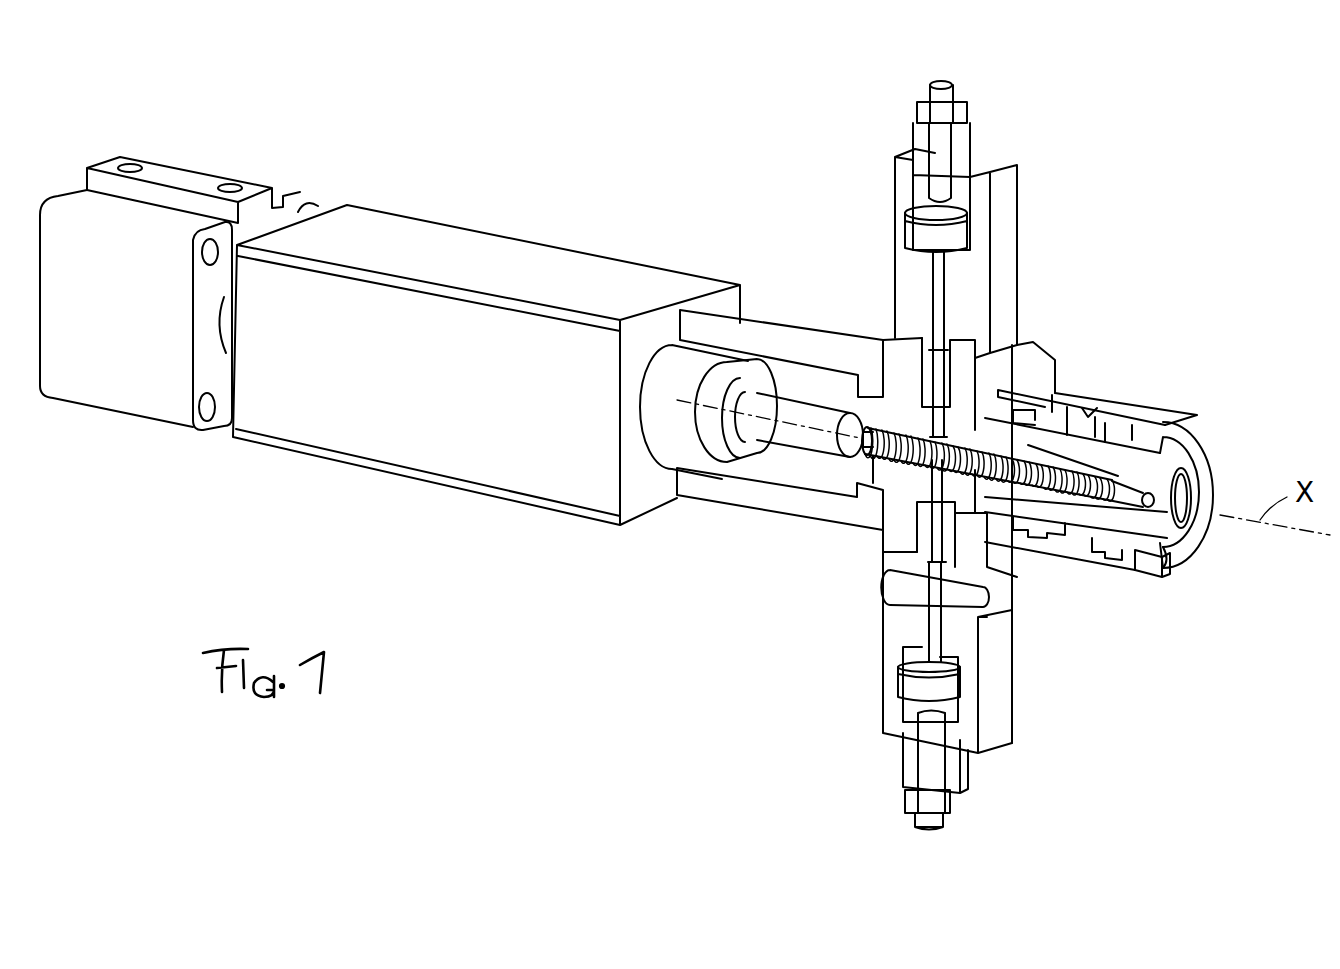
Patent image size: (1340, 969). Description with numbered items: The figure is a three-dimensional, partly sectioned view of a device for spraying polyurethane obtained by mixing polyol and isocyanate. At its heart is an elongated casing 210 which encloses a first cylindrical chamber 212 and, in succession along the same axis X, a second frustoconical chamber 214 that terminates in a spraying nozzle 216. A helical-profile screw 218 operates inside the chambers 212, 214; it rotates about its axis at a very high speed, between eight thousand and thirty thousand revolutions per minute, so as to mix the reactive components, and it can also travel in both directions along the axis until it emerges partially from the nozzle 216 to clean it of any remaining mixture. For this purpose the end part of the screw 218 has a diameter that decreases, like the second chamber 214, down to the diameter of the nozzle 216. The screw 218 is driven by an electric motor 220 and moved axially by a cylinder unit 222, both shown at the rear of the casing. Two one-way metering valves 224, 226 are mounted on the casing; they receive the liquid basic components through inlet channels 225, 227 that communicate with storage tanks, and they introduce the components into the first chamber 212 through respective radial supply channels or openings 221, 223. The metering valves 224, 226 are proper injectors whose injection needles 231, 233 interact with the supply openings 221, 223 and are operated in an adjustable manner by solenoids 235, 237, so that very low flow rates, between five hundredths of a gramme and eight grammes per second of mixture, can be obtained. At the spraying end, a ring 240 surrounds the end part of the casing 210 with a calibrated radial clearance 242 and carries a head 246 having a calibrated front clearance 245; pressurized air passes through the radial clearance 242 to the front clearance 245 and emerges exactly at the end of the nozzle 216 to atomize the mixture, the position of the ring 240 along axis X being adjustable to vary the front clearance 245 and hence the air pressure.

The elongated casing 210 is at (1103, 523).
The first cylindrical chamber 212 is at (968, 437).
The second frustoconical chamber 214 is at (1107, 472).
The spraying nozzle 216 is at (1193, 490).
The helical-profile screw 218 is at (1013, 470).
The electric motor 220 is at (113, 395).
The radial supply channel 221 is at (960, 425).
The cylinder unit 222 is at (493, 470).
The radial supply channel 223 is at (933, 473).
The one-way metering valve 224 is at (1022, 187).
The inlet channel 225 is at (912, 318).
The one-way metering valve 226 is at (1018, 686).
The inlet channel 227 is at (912, 587).
The injection needle 231 is at (938, 362).
The injection needle 233 is at (937, 545).
The solenoid 235 is at (926, 237).
The solenoid 237 is at (915, 683).
The ring 240 is at (1110, 445).
The radial clearance 242 is at (1149, 555).
The front clearance 245 is at (1170, 573).
The head 246 is at (1183, 530).